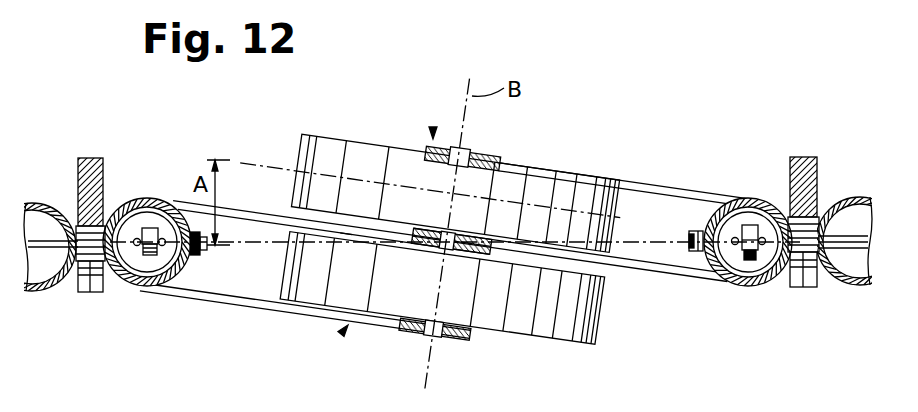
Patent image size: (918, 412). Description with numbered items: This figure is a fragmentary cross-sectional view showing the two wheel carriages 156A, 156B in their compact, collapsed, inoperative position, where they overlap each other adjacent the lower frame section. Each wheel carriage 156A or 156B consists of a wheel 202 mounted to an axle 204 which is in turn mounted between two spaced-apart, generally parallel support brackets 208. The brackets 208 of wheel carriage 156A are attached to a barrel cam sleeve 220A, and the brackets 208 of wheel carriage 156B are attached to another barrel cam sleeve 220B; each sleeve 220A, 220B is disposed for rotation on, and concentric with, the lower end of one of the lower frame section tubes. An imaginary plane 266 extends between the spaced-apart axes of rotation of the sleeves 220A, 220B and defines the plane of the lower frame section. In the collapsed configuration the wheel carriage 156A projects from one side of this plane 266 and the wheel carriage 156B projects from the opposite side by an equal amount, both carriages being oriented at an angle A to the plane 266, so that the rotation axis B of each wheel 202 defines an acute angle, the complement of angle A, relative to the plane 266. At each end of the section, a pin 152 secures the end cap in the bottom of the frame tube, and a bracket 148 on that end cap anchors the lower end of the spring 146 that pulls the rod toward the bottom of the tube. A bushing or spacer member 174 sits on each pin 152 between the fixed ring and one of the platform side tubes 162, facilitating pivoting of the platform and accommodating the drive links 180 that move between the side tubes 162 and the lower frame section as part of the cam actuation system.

The spring 146 is at (133, 252).
The bracket 148 is at (150, 228).
The shaft or pin 152 is at (58, 205).
The wheel carriage 156A is at (346, 327).
The wheel carriage 156B is at (433, 130).
The platform side tube 162 is at (45, 203).
The bushing or spacer member 174 is at (90, 293).
The drive link 180 is at (90, 160).
The wheel 202 is at (343, 140).
The axle 204 is at (470, 146).
The support bracket 208 is at (237, 217).
The barrel cam sleeve 220A is at (140, 290).
The barrel cam sleeve 220B is at (765, 288).
The imaginary plane 266 is at (345, 250).